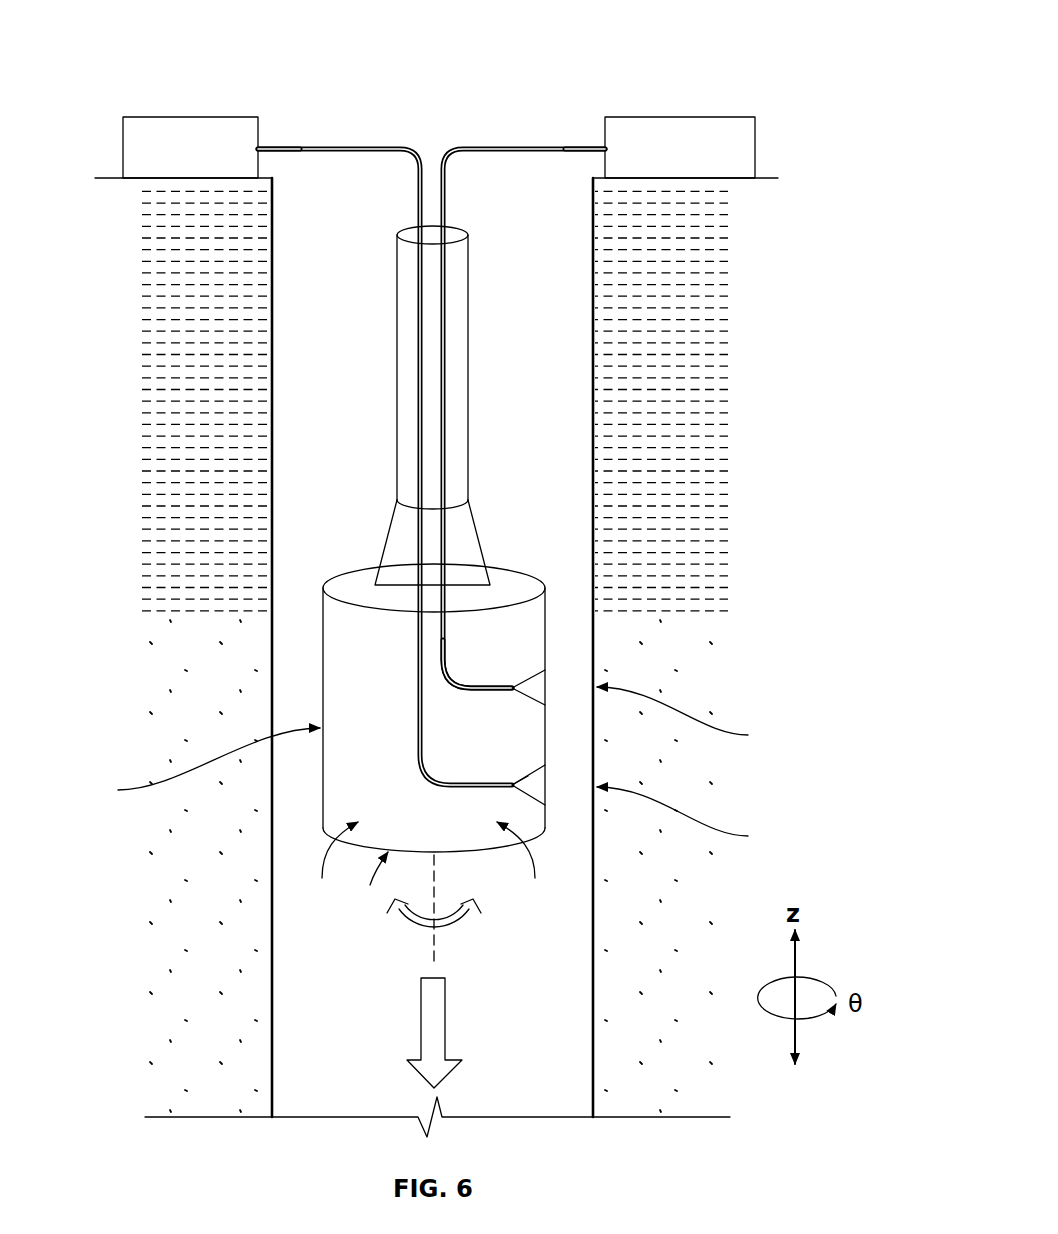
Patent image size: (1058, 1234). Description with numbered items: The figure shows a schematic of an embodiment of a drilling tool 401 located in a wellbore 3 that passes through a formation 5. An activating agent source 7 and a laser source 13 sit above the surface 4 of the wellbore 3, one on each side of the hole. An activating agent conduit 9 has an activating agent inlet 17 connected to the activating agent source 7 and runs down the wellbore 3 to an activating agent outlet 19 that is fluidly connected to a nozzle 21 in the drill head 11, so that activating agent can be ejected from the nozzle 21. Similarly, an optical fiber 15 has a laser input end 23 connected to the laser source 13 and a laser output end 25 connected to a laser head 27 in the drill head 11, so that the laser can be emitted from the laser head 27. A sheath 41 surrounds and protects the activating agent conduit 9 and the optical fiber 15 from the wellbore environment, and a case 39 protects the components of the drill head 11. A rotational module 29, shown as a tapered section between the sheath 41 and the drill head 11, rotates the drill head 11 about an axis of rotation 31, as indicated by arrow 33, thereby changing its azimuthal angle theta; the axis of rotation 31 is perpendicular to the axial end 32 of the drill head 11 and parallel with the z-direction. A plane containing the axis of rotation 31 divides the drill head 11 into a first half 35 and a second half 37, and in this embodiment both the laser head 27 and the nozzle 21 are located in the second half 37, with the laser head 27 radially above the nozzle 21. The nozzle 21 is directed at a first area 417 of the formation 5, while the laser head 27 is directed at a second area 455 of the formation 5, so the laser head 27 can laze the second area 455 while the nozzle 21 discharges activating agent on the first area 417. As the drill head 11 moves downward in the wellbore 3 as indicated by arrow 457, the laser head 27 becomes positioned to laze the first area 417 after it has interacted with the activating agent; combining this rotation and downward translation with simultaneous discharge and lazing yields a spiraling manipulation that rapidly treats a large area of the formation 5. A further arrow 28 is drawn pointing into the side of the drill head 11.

The drilling tool 401 is at (758, 30).
The wellbore 3 is at (272, 332).
The surface 4 is at (170, 235).
The formation 5 is at (185, 858).
The activating agent source 7 is at (165, 117).
The activating agent conduit 9 is at (418, 297).
The drill head 11 is at (322, 628).
The laser source 13 is at (722, 117).
The optical fiber 15 is at (445, 327).
The activating agent inlet 17 is at (270, 142).
The activating agent outlet 19 is at (506, 791).
The nozzle 21 is at (535, 787).
The laser input end 23 is at (597, 142).
The laser output end 25 is at (498, 680).
The laser head 27 is at (535, 690).
The flow arrow 28 is at (202, 766).
The rotational module 29 is at (382, 540).
The axis of rotation 31 is at (436, 862).
The axial end 32 is at (370, 886).
The arrow 33 is at (455, 920).
The first half 35 is at (333, 864).
The second half 37 is at (524, 863).
The case 39 is at (505, 570).
The sheath 41 is at (397, 383).
The second area 455 is at (699, 718).
The first area 417 is at (699, 818).
The arrow 457 is at (445, 1012).